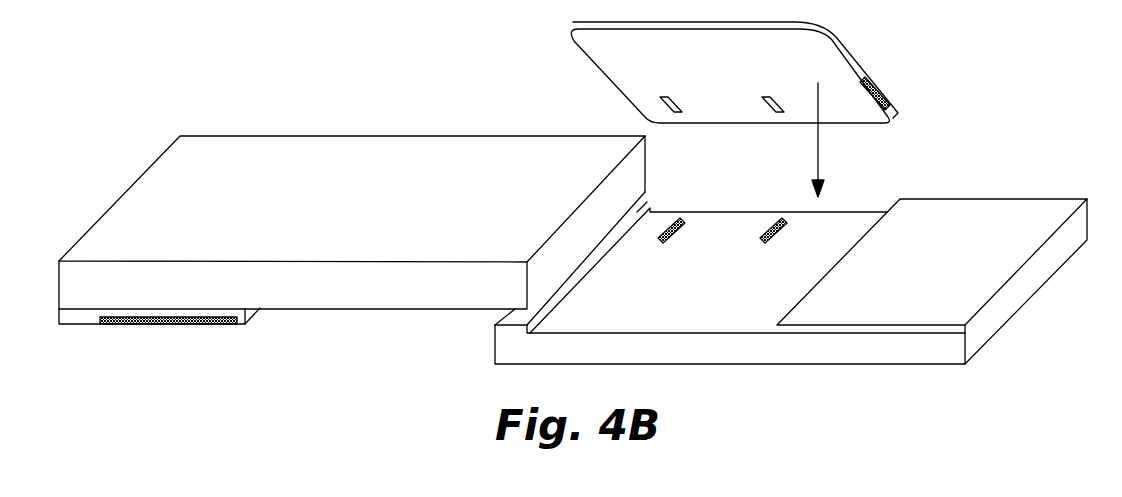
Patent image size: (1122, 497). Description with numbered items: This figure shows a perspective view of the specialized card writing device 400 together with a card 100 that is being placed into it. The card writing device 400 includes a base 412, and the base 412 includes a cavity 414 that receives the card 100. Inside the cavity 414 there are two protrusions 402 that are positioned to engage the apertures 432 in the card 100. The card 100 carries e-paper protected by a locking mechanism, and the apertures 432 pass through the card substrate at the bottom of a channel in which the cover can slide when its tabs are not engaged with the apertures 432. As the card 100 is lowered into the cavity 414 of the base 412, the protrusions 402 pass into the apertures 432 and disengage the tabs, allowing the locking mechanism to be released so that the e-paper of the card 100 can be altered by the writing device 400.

The specialized card writing device 400 is at (222, 113).
The card 100 is at (597, 55).
The apertures 432 is at (680, 112).
The protrusions 402 is at (742, 218).
The cavity 414 is at (758, 315).
The base 412 is at (985, 318).